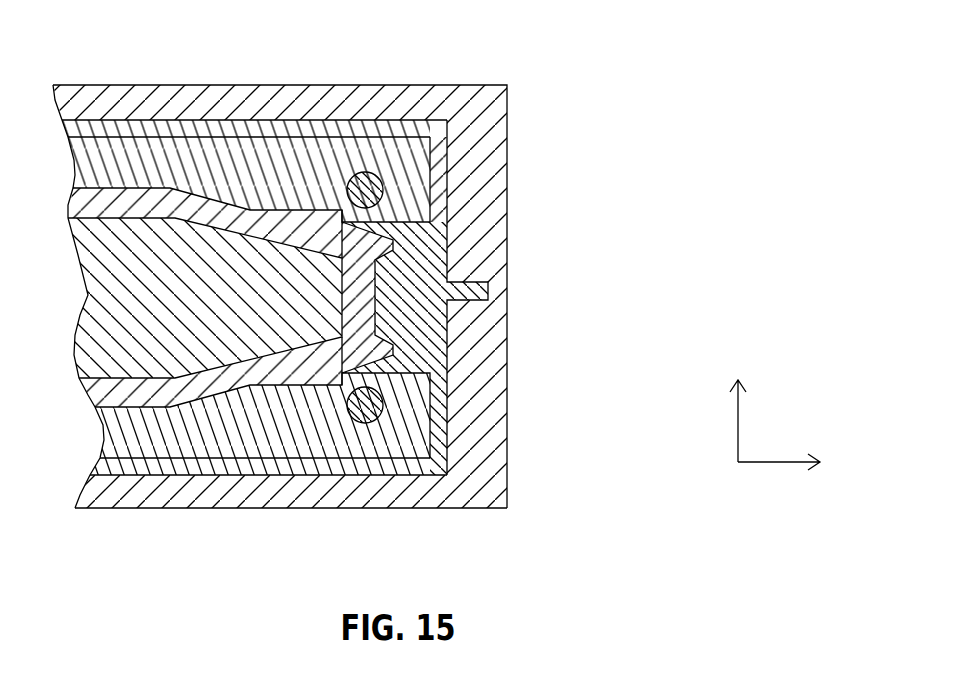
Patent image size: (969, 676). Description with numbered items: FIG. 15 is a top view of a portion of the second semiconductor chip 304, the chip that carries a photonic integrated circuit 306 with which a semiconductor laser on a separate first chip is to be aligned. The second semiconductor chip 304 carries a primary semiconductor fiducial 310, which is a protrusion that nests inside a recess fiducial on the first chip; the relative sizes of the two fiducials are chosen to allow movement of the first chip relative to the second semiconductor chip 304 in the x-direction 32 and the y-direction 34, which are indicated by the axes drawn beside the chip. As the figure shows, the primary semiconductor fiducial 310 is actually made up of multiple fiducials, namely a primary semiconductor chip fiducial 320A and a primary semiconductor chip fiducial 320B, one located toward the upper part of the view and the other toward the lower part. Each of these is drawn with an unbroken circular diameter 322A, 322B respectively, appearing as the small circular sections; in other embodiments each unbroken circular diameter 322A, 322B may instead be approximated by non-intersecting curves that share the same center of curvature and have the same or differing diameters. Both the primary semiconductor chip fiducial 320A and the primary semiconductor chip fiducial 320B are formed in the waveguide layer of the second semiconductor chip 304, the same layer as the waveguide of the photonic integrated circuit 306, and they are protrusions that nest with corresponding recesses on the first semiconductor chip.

The second semiconductor chip 304 is at (515, 128).
The photonic integrated circuit 306 is at (163, 128).
The primary semiconductor fiducial 310 is at (515, 465).
The primary semiconductor chip fiducial 320A is at (392, 200).
The primary semiconductor chip fiducial 320B is at (392, 398).
The unbroken circular diameter 322A is at (362, 183).
The unbroken circular diameter 322B is at (357, 427).
The x-direction 32 is at (778, 462).
The y-direction 34 is at (738, 420).